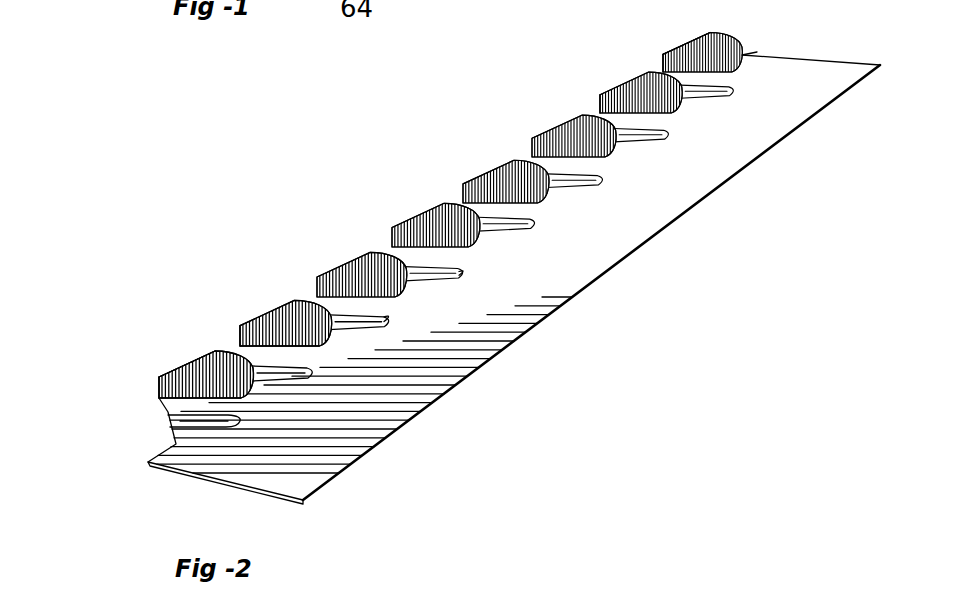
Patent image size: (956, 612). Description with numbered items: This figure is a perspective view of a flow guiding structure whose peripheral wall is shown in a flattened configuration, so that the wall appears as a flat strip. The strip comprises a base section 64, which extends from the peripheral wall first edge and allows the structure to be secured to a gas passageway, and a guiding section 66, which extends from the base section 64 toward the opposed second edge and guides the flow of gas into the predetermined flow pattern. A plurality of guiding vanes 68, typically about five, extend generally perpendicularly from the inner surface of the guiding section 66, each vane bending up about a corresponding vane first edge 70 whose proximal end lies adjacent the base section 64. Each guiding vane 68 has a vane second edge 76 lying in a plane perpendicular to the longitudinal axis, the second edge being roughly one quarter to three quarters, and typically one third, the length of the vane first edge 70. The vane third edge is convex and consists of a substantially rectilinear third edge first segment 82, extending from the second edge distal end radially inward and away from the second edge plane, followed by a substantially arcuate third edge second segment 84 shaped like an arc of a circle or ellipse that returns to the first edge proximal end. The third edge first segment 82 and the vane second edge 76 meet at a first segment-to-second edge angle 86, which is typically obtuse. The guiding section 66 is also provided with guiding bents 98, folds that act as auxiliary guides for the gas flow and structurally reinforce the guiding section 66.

The base section 64 is at (577, 262).
The guiding section 66 is at (108, 490).
The guiding vanes 68 is at (276, 300).
The vane first edge 70 is at (167, 408).
The vane second edge 76 is at (662, 70).
The third edge first segment 82 is at (670, 53).
The third edge second segment 84 is at (738, 54).
The first segment-to-second edge angle 86 is at (603, 90).
The guiding bent 98 is at (393, 318).